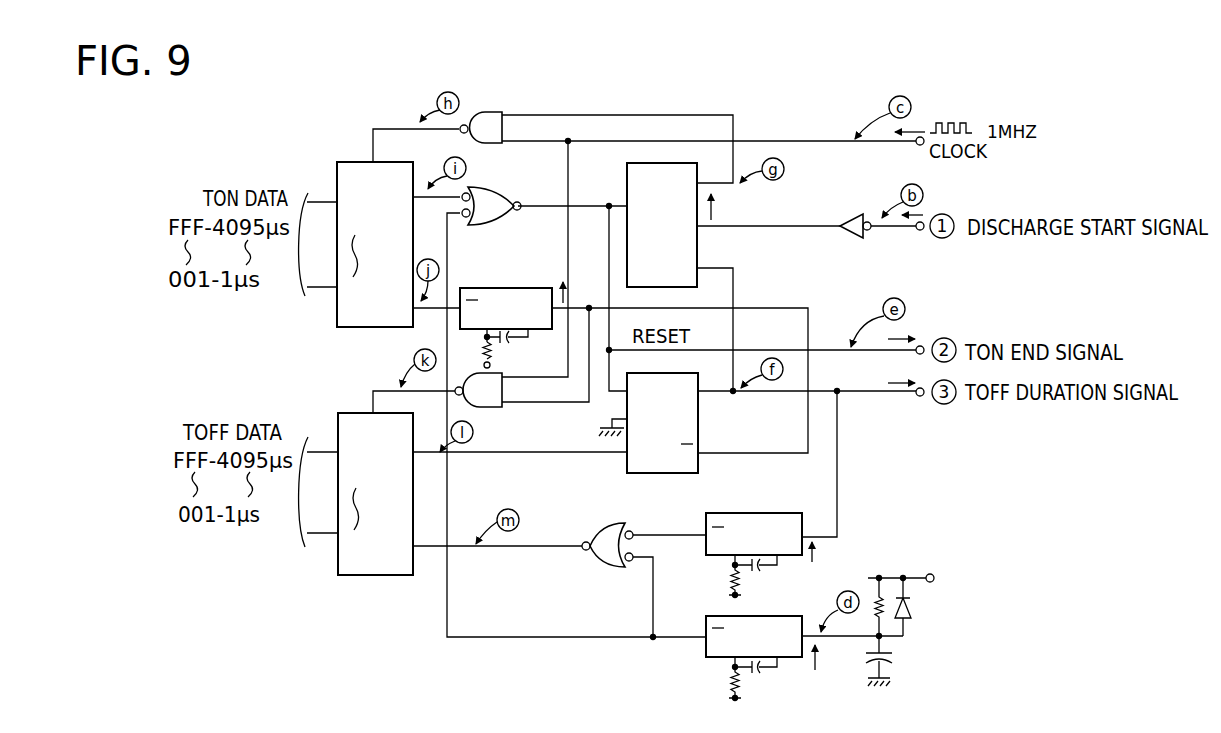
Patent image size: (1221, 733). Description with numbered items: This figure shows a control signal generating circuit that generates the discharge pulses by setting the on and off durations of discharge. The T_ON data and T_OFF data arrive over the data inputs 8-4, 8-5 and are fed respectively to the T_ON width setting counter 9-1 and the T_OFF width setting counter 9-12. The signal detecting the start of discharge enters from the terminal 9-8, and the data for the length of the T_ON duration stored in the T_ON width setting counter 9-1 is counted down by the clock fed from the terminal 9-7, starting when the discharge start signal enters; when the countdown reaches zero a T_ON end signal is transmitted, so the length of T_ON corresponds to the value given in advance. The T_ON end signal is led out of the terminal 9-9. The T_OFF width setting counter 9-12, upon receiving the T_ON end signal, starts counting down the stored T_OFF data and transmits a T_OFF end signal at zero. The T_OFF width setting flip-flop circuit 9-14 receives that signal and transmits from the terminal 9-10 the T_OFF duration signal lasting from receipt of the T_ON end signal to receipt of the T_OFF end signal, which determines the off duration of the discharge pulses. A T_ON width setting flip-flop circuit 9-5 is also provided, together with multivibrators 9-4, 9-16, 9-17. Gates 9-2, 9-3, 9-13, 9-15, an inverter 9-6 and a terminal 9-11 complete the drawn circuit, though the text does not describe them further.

The TON data input bus 8-4 is at (320, 222).
The TOFF data input bus 8-5 is at (322, 470).
The T_ON width setting counter 9-1 is at (352, 174).
The AND gate 9-2 is at (491, 124).
The NOR gate 9-3 is at (500, 201).
The multivibrator 9-4 is at (512, 288).
The T_ON width setting flip-flop circuit 9-5 is at (622, 168).
The inverter 9-6 is at (858, 216).
The terminal 9-7 is at (915, 144).
The terminal 9-8 is at (917, 231).
The terminal 9-9 is at (915, 354).
The terminal 9-10 is at (919, 397).
The power supply terminal 9-11 is at (929, 574).
The T_OFF width setting counter 9-12 is at (353, 420).
The AND gate 9-13 is at (486, 397).
The T_OFF width setting flip-flop circuit 9-14 is at (667, 474).
The NOR gate 9-15 is at (606, 541).
The multivibrator 9-16 is at (763, 512).
The multivibrator 9-17 is at (712, 615).